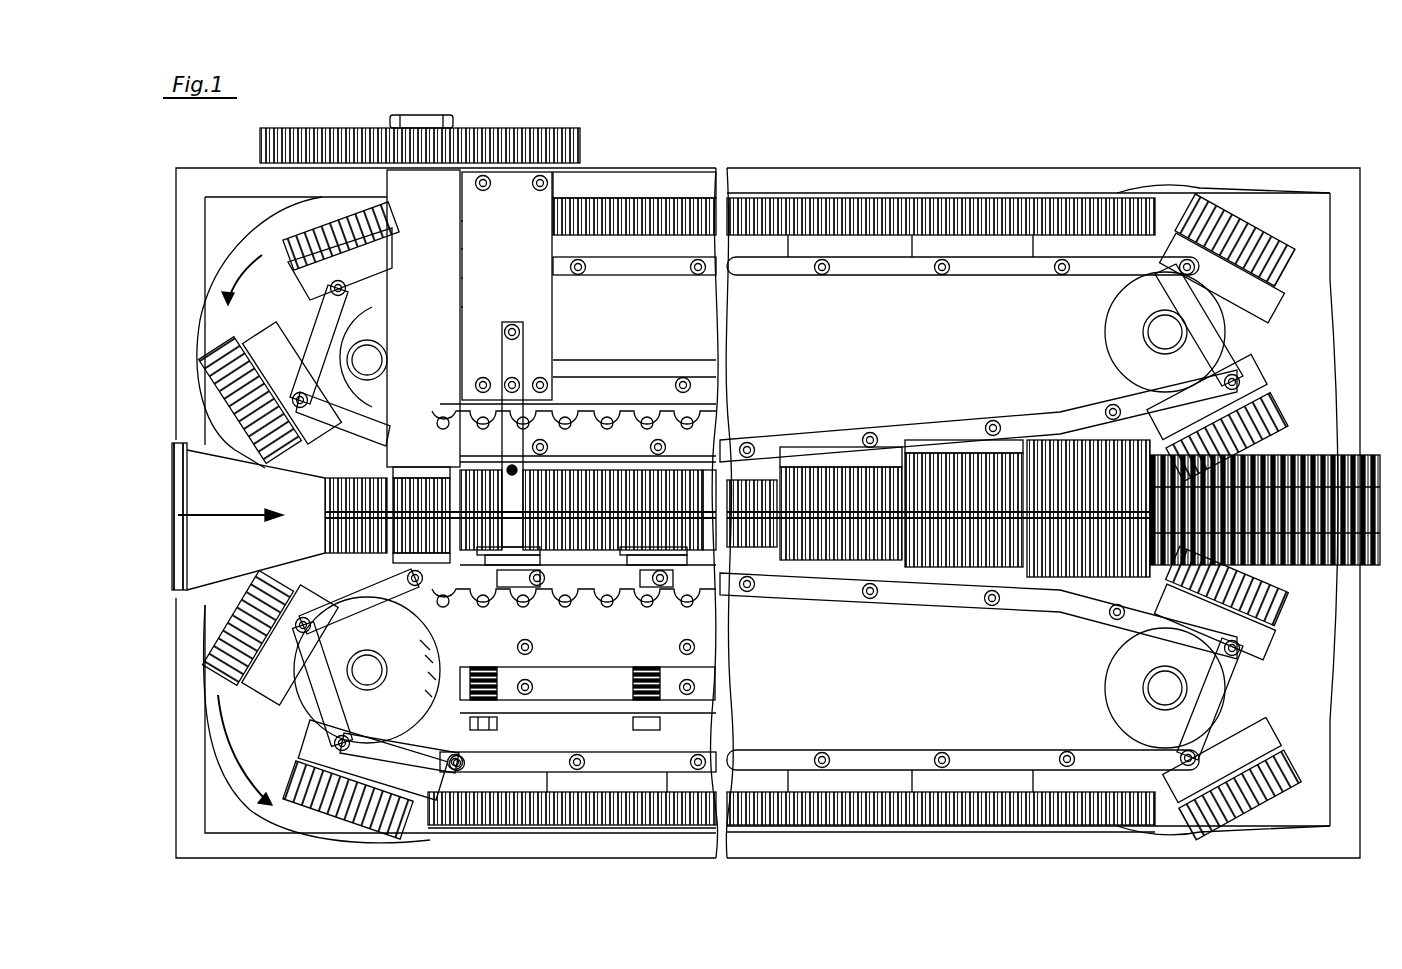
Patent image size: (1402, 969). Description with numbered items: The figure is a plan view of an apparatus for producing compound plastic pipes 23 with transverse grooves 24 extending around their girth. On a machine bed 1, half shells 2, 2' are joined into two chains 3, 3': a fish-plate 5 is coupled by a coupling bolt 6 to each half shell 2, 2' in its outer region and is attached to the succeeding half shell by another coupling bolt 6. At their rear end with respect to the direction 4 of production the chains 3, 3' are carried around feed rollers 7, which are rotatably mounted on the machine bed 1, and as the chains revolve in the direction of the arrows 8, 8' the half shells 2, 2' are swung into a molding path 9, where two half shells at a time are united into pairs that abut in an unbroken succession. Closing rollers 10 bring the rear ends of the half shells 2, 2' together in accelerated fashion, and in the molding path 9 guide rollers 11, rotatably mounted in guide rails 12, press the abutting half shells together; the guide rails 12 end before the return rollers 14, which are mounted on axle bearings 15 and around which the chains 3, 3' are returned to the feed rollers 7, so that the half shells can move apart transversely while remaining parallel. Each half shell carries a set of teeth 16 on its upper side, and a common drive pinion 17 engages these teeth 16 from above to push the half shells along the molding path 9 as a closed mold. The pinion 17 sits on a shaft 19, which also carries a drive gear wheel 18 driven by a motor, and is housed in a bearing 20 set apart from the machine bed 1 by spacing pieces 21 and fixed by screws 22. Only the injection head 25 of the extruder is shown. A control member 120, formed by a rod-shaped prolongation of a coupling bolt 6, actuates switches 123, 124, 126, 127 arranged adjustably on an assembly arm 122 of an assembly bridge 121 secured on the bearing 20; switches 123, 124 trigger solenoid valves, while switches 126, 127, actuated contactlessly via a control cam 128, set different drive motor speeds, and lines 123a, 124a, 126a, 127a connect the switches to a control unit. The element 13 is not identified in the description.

The machine bed 1 is at (233, 258).
The half shell 2 is at (226, 393).
The half shell 2' is at (260, 796).
The chain 3 is at (216, 329).
The chain 3' is at (300, 760).
The direction of production 4 is at (178, 460).
The fish-plate 5 is at (875, 268).
The coupling bolt 6 is at (942, 262).
The feed roller 7 is at (367, 672).
The arrow 8 is at (186, 287).
The arrow 8' is at (190, 763).
The molding path 9 is at (762, 465).
The closing roller 10 is at (300, 425).
The guide roller 11 is at (475, 630).
The guide rail 12 is at (390, 697).
The pulley hub 13 is at (355, 692).
The return roller 14 is at (1130, 688).
The axle bearing 15 is at (1165, 688).
The set of teeth 16 is at (267, 688).
The drive pinion 17 is at (405, 528).
The drive gear wheel 18 is at (367, 130).
The shaft 19 is at (417, 117).
The bearing 20 is at (423, 232).
The spacing piece 21 is at (558, 180).
The screw 22 is at (462, 178).
The plastic pipe 23 is at (1318, 455).
The groove 24 is at (1322, 565).
The injection head 25 is at (215, 532).
The control member 120 is at (303, 625).
The assembly bridge 121 is at (515, 372).
The assembly arm 122 is at (598, 547).
The switch 123 is at (483, 722).
The switch 124 is at (670, 568).
The switch 126 is at (527, 652).
The switch 127 is at (640, 585).
The control cam 128 is at (413, 579).
The line 123a is at (465, 218).
The line 124a is at (465, 246).
The line 126a is at (465, 275).
The line 127a is at (465, 304).